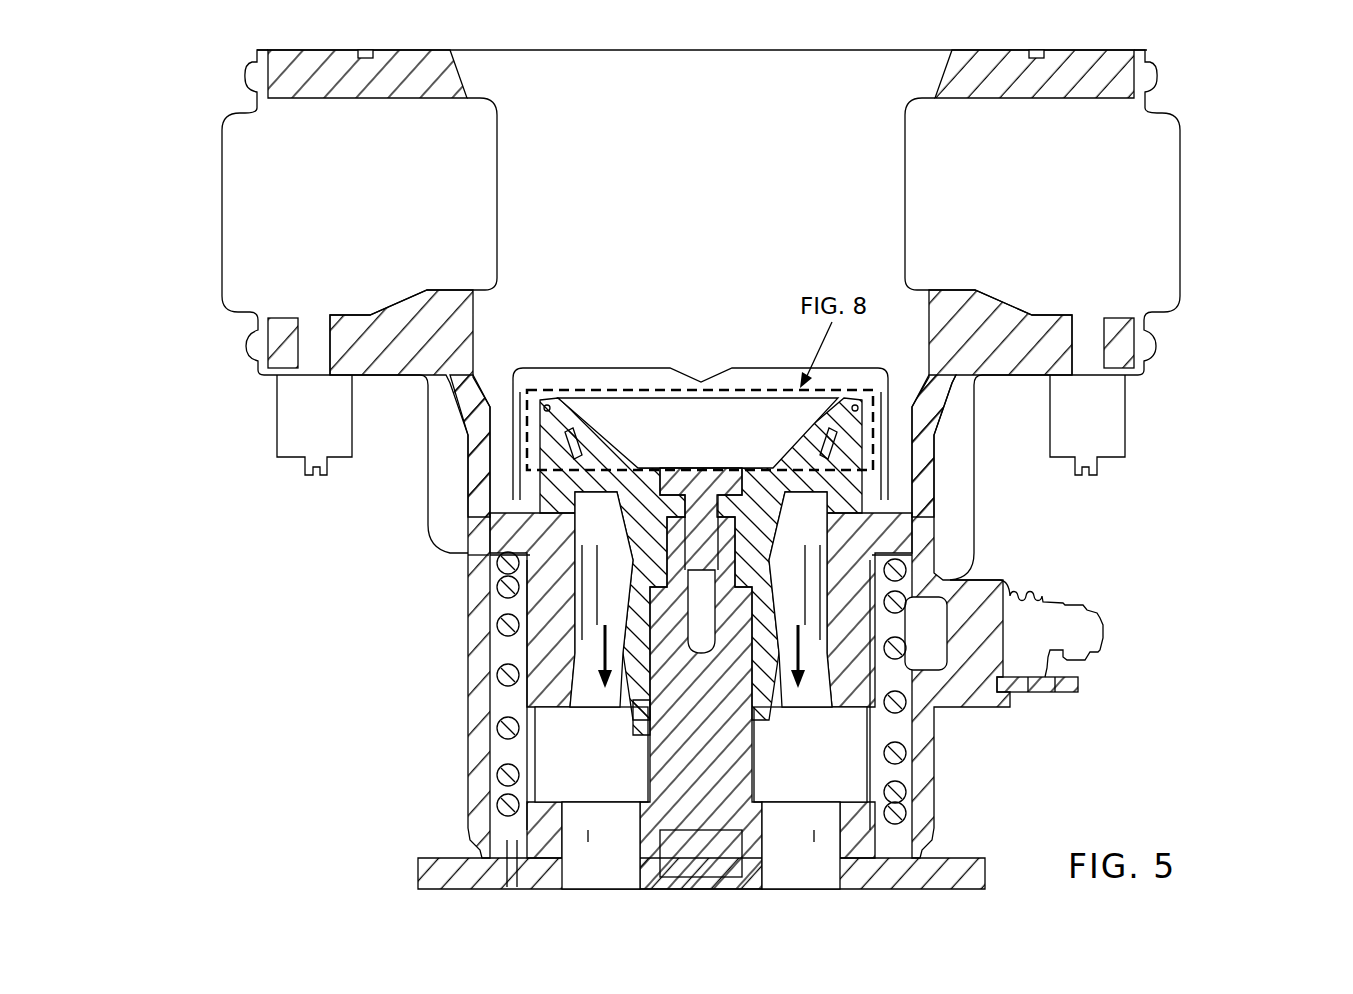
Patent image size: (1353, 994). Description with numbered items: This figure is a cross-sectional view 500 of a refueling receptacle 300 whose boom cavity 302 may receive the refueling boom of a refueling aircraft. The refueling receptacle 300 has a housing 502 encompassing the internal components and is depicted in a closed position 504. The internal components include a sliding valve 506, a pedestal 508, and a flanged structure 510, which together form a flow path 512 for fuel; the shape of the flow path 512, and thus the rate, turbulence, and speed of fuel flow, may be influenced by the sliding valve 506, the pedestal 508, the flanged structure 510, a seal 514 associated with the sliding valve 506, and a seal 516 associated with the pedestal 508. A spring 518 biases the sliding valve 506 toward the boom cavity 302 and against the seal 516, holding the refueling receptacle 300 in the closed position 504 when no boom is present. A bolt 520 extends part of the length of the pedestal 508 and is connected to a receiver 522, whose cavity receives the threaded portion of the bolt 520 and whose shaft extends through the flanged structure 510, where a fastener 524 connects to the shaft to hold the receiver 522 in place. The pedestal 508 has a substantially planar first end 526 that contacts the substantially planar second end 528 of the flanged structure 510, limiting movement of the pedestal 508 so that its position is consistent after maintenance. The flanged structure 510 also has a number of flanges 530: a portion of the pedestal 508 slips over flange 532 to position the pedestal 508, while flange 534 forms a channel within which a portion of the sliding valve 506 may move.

The refueling receptacle 300 is at (1266, 351).
The boom cavity 302 is at (728, 120).
The view 500 is at (210, 612).
The housing 502 is at (478, 768).
The closed position 504 is at (374, 688).
The sliding valve 506 is at (497, 540).
The pedestal 508 is at (642, 478).
The flanged structure 510 is at (757, 856).
The flow path 512 is at (797, 622).
The seal 514 is at (542, 397).
The seal 516 is at (830, 447).
The spring 518 is at (513, 633).
The bolt 520 is at (708, 487).
The receiver 522 is at (767, 723).
The fastener 524 is at (667, 838).
The first end 526 is at (630, 815).
The second end 528 is at (803, 784).
The number of flanges 530 is at (386, 653).
The flange 532 is at (658, 733).
The flange 534 is at (875, 773).